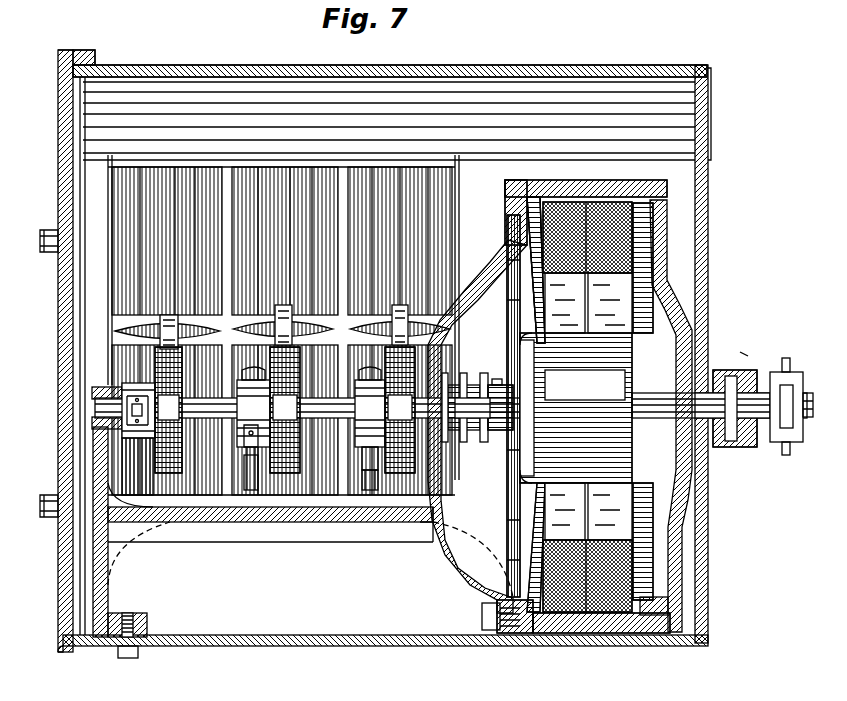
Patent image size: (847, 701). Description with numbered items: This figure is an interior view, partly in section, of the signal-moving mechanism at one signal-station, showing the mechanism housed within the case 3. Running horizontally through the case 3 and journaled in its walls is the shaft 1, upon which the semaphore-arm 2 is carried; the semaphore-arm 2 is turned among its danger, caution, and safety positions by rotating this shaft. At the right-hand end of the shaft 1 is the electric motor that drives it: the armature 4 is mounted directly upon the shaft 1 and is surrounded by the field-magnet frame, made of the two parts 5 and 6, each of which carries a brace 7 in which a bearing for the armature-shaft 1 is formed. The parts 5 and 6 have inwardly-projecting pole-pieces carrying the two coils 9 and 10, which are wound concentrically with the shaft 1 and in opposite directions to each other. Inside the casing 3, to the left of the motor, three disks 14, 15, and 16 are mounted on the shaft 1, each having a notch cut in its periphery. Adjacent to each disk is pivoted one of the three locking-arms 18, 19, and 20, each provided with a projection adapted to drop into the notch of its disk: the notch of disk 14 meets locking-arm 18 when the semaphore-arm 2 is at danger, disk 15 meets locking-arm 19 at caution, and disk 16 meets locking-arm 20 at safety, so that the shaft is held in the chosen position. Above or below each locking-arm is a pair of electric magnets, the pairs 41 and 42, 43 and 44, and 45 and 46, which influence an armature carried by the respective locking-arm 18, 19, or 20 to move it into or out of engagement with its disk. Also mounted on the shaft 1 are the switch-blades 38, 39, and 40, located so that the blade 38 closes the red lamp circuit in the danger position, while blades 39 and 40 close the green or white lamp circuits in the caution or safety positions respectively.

The shaft 1 is at (822, 402).
The semaphore-arm 2 is at (786, 358).
The case 3 is at (389, 121).
The armature 4 is at (576, 408).
The field-magnet frame part 5 is at (505, 210).
The field-magnet frame part 6 is at (660, 196).
The brace 7 is at (470, 293).
The coil 9 is at (620, 401).
The coil 10 is at (556, 404).
The disk 14 is at (168, 410).
The disk 15 is at (285, 410).
The disk 16 is at (400, 410).
The locking-arm 18 is at (130, 336).
The locking-arm 19 is at (262, 318).
The locking-arm 20 is at (378, 318).
The switch-blade 38 is at (92, 410).
The switch-blade 39 is at (252, 490).
The switch-blade 40 is at (370, 490).
The electric magnet 41 is at (137, 466).
The electric magnet 42 is at (167, 331).
The electric magnet 43 is at (254, 429).
The electric magnet 44 is at (285, 331).
The electric magnet 45 is at (378, 430).
The electric magnet 46 is at (400, 331).